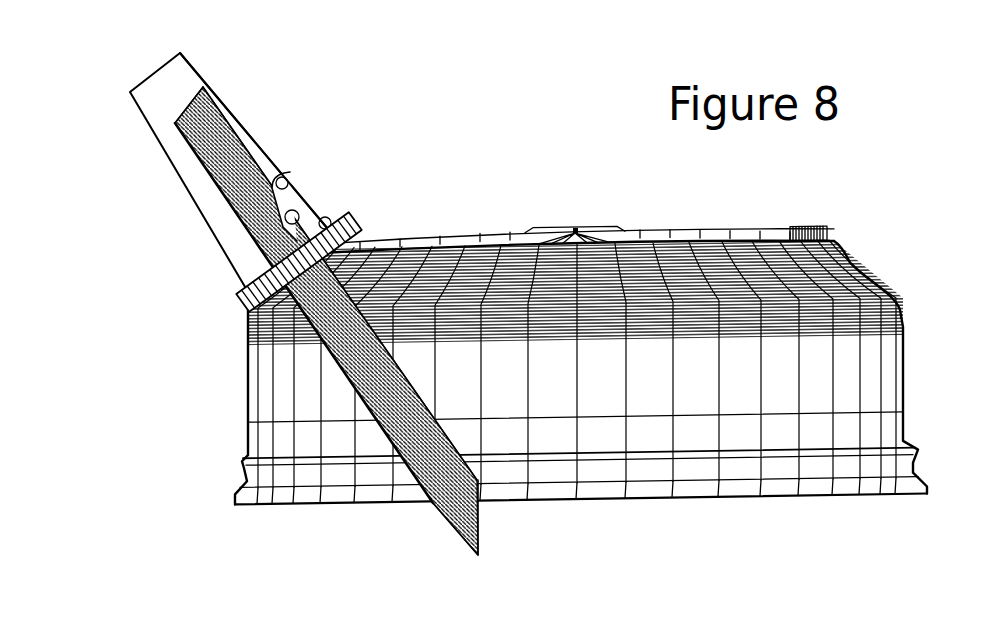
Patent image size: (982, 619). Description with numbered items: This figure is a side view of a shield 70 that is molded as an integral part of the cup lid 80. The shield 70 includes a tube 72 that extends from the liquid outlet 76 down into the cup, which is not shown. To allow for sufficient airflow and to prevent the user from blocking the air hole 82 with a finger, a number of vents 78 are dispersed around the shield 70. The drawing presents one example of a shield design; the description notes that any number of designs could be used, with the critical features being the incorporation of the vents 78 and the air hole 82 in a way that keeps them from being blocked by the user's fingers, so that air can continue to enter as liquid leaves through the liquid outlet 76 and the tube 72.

The shield 70 is at (258, 118).
The tube 72 is at (432, 502).
The liquid outlet 76 is at (189, 105).
The vents 78 is at (311, 190).
The cup lid 80 is at (509, 237).
The air hole 82 is at (290, 172).